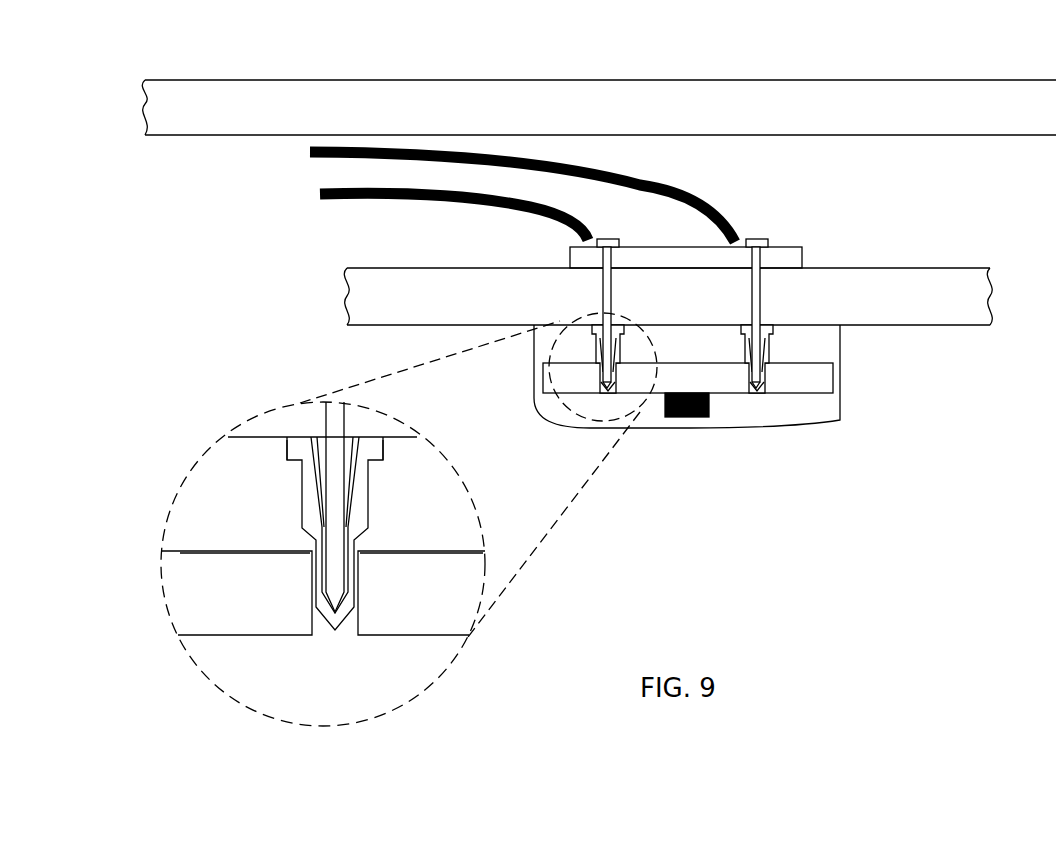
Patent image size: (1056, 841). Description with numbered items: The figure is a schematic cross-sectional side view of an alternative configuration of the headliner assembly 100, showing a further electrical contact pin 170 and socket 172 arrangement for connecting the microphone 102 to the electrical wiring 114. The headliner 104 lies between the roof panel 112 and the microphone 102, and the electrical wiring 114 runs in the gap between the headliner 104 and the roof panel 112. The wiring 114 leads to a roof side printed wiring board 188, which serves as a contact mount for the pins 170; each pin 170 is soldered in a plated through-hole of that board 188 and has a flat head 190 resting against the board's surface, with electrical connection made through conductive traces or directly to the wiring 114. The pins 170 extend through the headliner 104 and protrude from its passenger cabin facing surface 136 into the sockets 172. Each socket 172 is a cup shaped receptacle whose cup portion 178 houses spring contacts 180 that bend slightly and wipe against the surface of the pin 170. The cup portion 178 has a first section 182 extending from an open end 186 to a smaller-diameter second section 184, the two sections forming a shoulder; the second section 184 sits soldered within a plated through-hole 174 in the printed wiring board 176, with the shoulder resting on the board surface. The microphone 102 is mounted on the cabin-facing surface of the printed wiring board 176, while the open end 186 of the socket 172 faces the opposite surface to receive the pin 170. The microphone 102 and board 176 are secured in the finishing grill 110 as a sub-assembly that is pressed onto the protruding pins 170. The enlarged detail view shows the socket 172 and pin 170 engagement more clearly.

The headliner assembly 100 is at (305, 220).
The microphone 102 is at (683, 417).
The headliner 104 is at (387, 318).
The finishing grill 110 is at (748, 428).
The roof panel 112 is at (507, 80).
The electrical wiring 114 is at (408, 197).
The passenger cabin facing surface 136 is at (947, 335).
The electrical contact pin 170 is at (593, 286).
The socket 172 is at (588, 348).
The plated through-hole 174 is at (367, 597).
The printed wiring board 176 is at (810, 393).
The cup portion 178 is at (368, 499).
The spring contacts 180 is at (353, 517).
The first section 182 is at (258, 437).
The second section 184 is at (258, 551).
The open end 186 is at (305, 428).
The roof side printed wiring board 188 is at (798, 248).
The flat head 190 is at (612, 238).